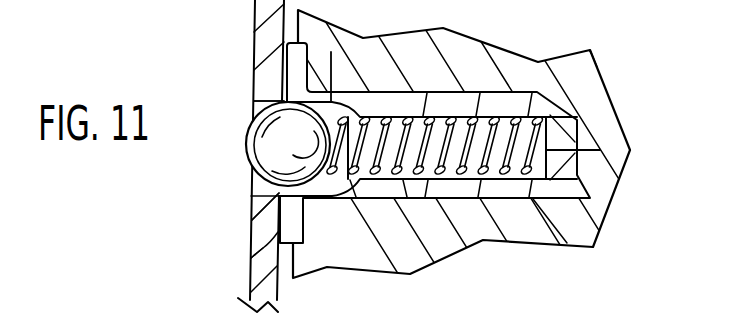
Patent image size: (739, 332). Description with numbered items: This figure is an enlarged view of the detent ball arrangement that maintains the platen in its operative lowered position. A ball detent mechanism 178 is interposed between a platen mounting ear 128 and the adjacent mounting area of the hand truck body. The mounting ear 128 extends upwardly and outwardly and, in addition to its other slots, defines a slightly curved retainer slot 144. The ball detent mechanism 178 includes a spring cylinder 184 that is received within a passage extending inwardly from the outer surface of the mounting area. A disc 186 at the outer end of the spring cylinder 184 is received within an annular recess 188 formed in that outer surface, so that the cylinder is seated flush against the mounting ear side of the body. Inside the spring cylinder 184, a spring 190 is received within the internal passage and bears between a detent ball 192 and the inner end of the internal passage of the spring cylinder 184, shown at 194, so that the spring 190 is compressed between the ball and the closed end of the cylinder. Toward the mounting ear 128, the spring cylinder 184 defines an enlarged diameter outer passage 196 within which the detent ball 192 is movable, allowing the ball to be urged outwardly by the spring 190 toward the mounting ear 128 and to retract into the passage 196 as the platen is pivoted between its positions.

The mounting ear 128 is at (240, 278).
The retainer slot 144 is at (255, 102).
The ball detent mechanism 178 is at (473, 92).
The spring cylinder 184 is at (484, 240).
The disc 186 is at (250, 259).
The annular recess 188 is at (251, 222).
The spring 190 is at (446, 200).
The detent ball 192 is at (249, 151).
The inner end of internal passage 194 is at (600, 150).
The enlarged diameter outer passage 196 is at (331, 52).